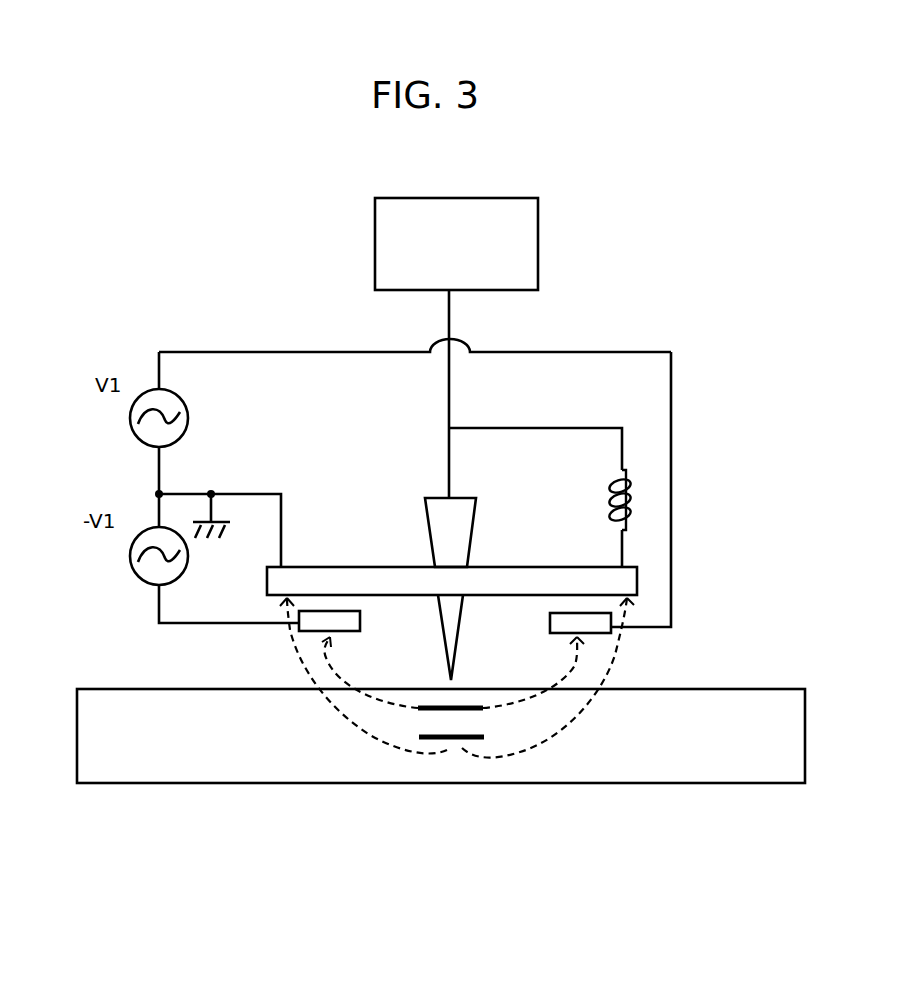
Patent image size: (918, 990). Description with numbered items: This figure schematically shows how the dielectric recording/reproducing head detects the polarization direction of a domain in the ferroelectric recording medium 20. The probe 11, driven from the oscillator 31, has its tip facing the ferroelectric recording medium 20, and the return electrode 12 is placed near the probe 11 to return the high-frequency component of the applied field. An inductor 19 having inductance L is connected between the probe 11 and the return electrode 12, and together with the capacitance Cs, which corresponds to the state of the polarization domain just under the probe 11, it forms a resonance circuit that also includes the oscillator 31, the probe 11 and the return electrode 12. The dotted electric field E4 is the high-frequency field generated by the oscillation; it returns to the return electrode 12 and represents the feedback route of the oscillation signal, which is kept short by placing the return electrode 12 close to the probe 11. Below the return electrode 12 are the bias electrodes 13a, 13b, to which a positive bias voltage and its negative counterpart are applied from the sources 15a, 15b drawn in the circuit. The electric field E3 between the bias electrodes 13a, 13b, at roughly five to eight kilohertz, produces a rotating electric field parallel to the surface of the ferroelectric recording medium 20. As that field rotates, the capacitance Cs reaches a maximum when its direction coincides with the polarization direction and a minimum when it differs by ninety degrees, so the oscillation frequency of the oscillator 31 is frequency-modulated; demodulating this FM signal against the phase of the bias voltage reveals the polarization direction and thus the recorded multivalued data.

The oscillator 31 is at (538, 243).
The first AC voltage source (V1) 15a is at (187, 410).
The second AC voltage source (-V1) 15b is at (132, 567).
The probe 11 is at (425, 503).
The inductor 19 is at (612, 488).
The return electrode 12 is at (637, 567).
The bias electrode 13a is at (360, 623).
The bias electrode 13b is at (550, 634).
The ferroelectric recording medium 20 is at (743, 689).
The electric field E3 is at (402, 710).
The electric field E4 is at (580, 700).
The capacitance Cs is at (453, 740).